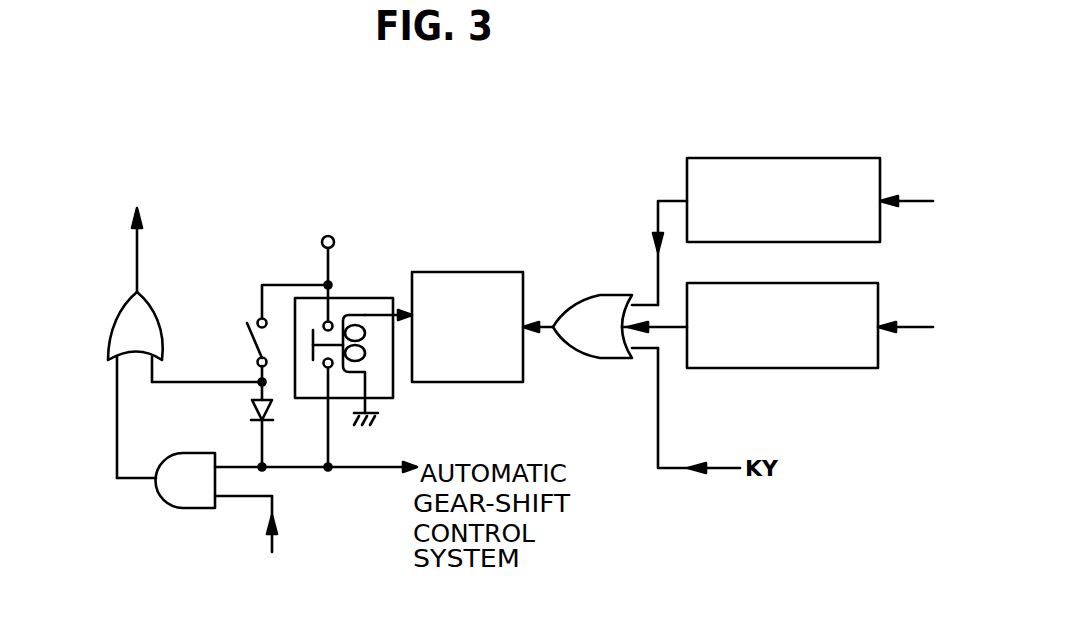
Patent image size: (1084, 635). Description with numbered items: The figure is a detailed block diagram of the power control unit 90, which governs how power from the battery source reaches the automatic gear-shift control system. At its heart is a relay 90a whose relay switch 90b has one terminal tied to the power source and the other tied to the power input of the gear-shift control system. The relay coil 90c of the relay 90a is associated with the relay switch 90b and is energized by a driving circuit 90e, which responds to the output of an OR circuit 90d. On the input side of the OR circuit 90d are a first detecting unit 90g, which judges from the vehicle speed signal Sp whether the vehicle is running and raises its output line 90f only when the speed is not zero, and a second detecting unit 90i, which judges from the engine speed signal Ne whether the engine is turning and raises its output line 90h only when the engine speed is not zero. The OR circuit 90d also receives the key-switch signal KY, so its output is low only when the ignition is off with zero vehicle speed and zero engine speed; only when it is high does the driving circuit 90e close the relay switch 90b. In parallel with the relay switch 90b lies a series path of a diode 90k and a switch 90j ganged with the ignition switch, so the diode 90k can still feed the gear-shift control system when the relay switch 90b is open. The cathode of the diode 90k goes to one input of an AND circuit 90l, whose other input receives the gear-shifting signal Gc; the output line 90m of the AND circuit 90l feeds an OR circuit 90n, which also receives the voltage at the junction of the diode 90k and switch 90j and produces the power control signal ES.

The power control unit 90 is at (758, 503).
The relay 90a is at (365, 298).
The relay switch 90b is at (310, 310).
The relay coil 90c is at (372, 348).
The OR circuit 90d is at (590, 295).
The driving circuit 90e is at (480, 272).
The output line 90f is at (658, 202).
The first detecting unit 90g is at (782, 158).
The output line 90h is at (673, 330).
The second detecting unit 90i is at (792, 368).
The switch 90j is at (248, 317).
The diode 90k is at (250, 409).
The AND circuit 90l is at (190, 508).
The output line 90m is at (117, 413).
The OR circuit 90n is at (162, 340).